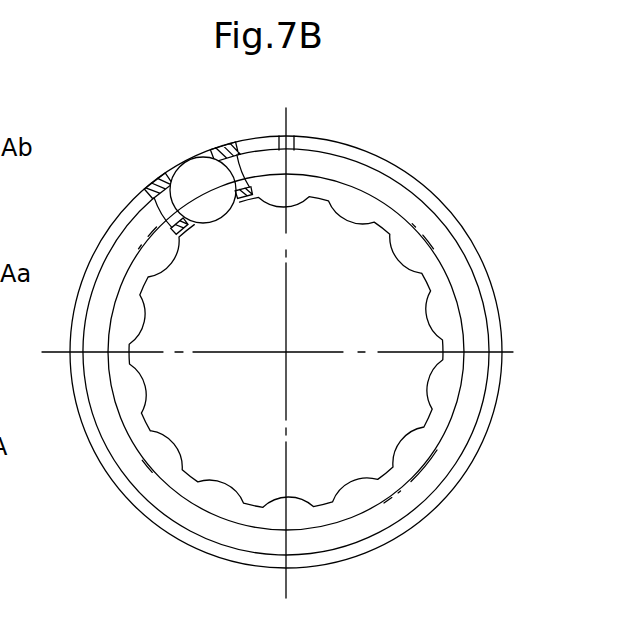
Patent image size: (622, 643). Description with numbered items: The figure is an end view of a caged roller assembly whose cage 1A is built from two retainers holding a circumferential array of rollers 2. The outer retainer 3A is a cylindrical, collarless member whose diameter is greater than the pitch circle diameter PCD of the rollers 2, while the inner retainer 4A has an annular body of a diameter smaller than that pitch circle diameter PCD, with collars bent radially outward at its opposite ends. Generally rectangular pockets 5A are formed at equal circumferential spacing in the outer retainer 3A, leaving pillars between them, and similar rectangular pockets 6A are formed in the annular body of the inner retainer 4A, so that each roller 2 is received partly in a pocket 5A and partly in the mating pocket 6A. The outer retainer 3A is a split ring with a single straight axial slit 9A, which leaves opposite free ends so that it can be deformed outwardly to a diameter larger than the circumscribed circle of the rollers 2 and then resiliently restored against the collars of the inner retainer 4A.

The rolling bearing 1A is at (45, 184).
The rollers 2 is at (397, 253).
The outer retainer 3A is at (120, 220).
The inner retainer 4A is at (125, 252).
The pockets 5A is at (181, 164).
The pockets 6A is at (231, 207).
The slit 9A is at (287, 137).
The pitch circle diameter of balls PCD is at (397, 210).